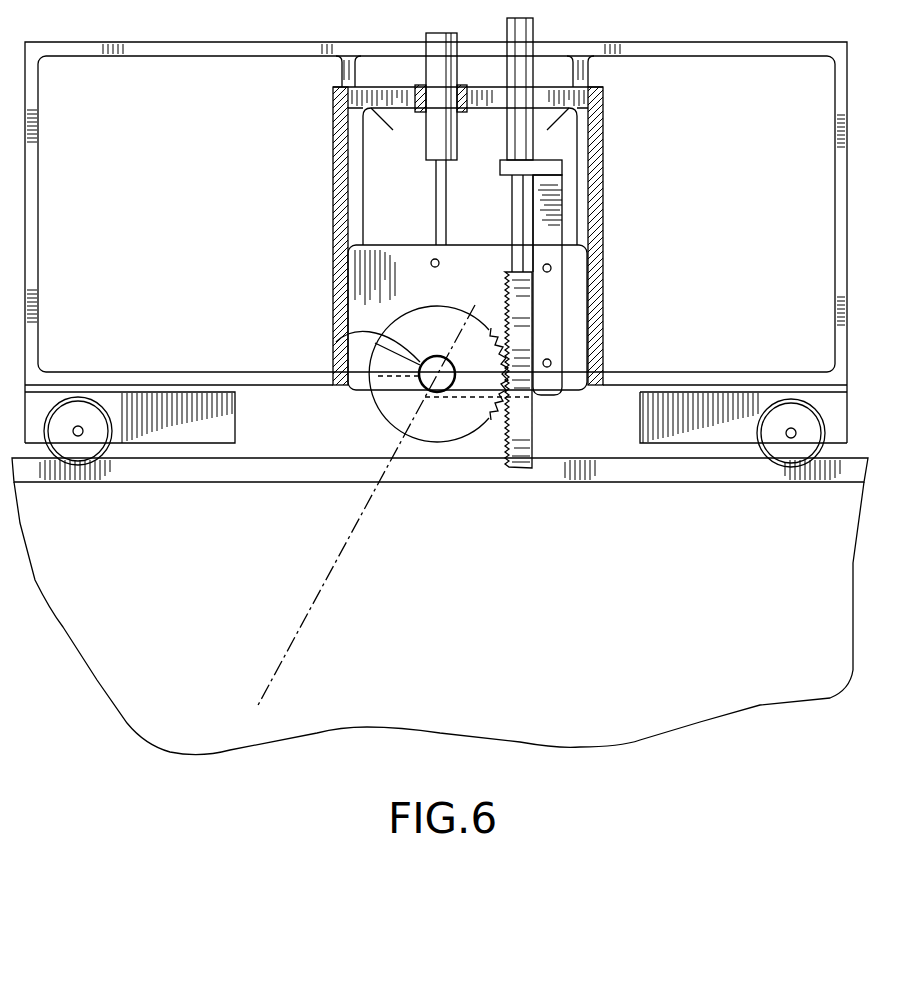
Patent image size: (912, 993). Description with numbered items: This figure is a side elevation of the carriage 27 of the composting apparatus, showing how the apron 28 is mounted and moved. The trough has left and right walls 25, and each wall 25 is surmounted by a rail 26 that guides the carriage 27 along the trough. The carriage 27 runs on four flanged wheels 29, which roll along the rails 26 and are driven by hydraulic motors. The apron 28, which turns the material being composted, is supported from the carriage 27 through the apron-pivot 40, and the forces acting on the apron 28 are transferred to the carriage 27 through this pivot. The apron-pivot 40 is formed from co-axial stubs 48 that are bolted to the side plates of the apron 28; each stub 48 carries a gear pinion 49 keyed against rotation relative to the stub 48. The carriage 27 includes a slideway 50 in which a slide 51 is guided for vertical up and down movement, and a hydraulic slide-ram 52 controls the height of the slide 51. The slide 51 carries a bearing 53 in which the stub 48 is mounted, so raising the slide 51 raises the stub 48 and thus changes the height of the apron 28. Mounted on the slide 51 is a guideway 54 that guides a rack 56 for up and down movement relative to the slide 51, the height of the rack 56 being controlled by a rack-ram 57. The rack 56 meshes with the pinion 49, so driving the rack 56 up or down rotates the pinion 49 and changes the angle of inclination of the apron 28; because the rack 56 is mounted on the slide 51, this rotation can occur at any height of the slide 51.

The wall 25 is at (176, 661).
The rail 26 is at (32, 485).
The carriage 27 is at (33, 209).
The apron 28 is at (295, 640).
The flanged wheel 29 is at (132, 482).
The apron-pivot 40 is at (420, 380).
The stub 48 is at (443, 394).
The gear pinion 49 is at (468, 437).
The slideway 50 is at (335, 172).
The slide 51 is at (383, 263).
The hydraulic slide-ram 52 is at (427, 128).
The bearing 53 is at (380, 333).
The guideway 54 is at (558, 255).
The rack 56 is at (523, 332).
The rack-ram 57 is at (525, 123).